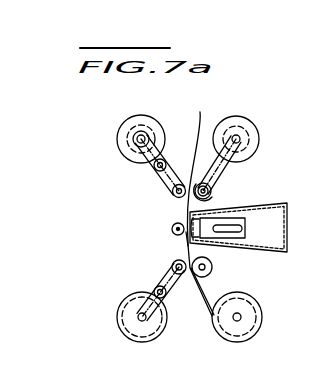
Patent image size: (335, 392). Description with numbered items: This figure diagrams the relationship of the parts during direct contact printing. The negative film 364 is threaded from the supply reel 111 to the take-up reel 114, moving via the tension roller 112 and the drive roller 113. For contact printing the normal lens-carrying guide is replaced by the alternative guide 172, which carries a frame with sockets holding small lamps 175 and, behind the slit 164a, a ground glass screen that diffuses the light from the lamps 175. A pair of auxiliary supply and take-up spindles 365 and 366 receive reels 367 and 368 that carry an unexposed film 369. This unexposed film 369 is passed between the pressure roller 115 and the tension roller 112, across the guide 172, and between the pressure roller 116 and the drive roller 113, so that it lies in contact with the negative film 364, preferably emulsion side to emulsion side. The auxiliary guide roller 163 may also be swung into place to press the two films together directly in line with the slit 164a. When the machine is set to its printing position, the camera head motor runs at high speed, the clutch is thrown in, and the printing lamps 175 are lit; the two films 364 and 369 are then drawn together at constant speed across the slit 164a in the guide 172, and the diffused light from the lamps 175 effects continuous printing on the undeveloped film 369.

The reel 368 is at (122, 130).
The auxiliary take-up spindle 366 is at (137, 141).
The negative film 364 is at (200, 118).
The take-up reel 114 is at (260, 134).
The pressure roller 116 is at (172, 190).
The drive roller 113 is at (212, 184).
The alternative guide 172 is at (212, 199).
The guide roller 163 is at (172, 227).
The slit 164a is at (180, 235).
The lamps 175 is at (247, 207).
The pressure roller 115 is at (171, 266).
The tension roller 112 is at (212, 271).
The unexposed film 369 is at (168, 296).
The auxiliary supply spindle 365 is at (137, 320).
The reel 367 is at (140, 338).
The supply reel 111 is at (241, 317).